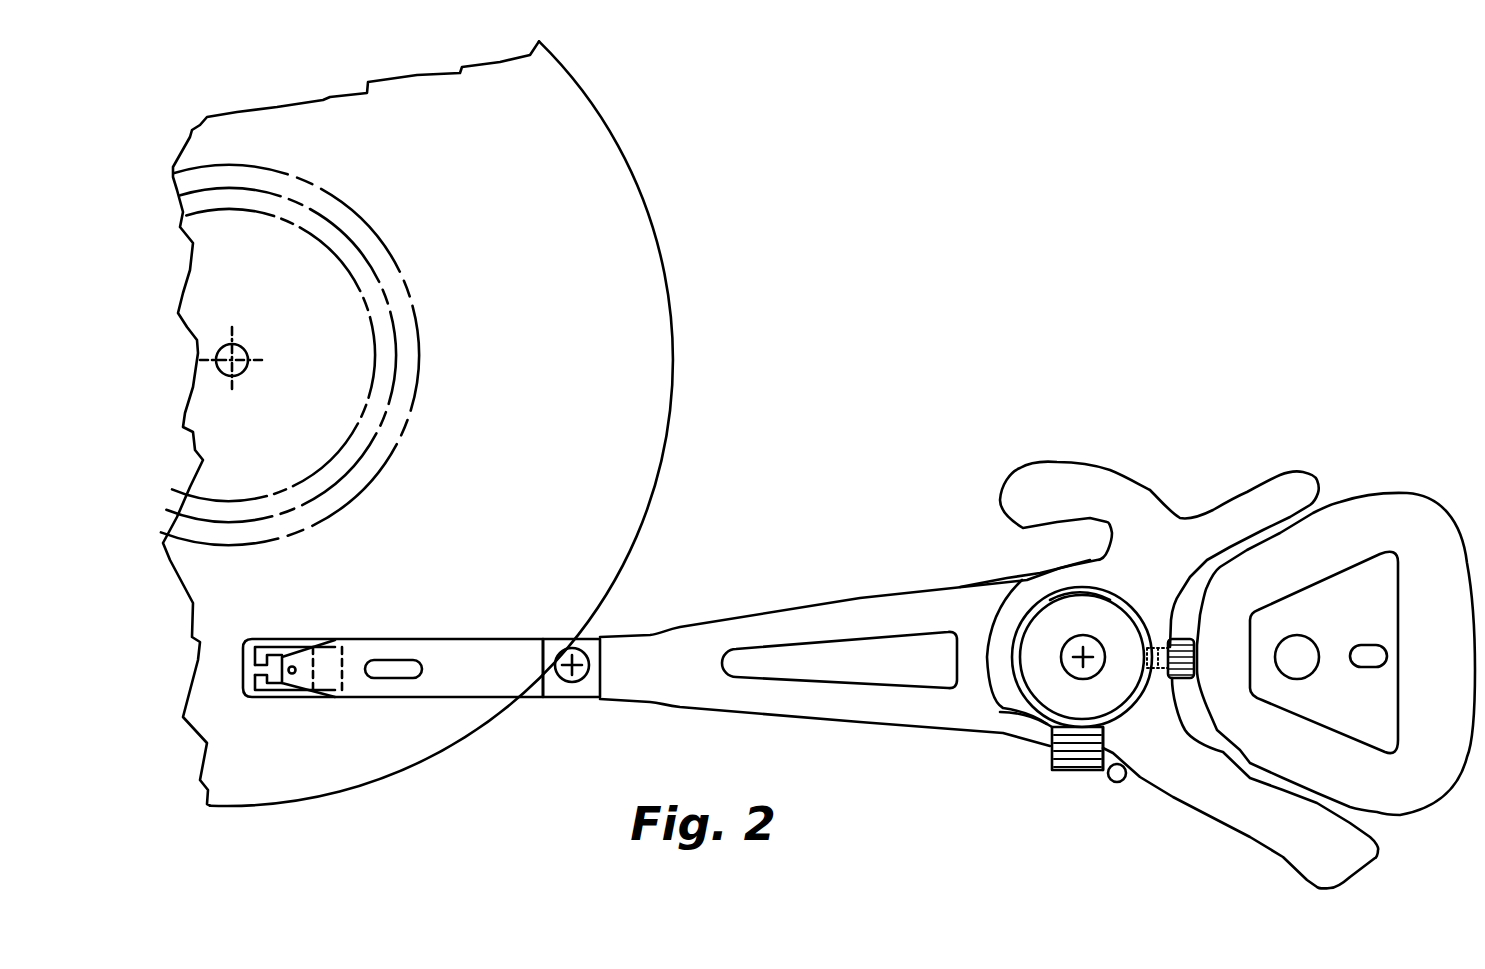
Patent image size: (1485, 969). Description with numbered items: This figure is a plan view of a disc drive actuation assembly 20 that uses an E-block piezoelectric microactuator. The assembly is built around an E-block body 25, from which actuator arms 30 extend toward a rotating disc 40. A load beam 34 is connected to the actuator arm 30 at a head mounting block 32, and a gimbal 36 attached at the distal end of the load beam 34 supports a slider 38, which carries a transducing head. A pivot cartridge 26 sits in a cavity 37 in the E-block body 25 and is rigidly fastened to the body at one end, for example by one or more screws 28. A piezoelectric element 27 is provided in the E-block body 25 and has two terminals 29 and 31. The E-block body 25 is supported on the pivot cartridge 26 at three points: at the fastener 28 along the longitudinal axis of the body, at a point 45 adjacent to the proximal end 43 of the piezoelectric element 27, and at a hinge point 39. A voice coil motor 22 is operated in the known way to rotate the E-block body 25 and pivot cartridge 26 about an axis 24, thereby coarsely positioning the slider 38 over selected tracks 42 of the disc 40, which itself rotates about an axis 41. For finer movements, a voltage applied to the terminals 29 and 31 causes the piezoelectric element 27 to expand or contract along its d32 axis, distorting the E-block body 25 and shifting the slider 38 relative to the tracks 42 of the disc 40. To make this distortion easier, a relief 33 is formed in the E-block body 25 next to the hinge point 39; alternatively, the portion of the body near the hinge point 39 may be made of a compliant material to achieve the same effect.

The disc drive actuation assembly 20 is at (853, 448).
The voice coil motor 22 is at (1410, 492).
The axis 24 is at (1089, 650).
The E-block body 25 is at (987, 625).
The pivot cartridge 26 is at (1141, 627).
The piezoelectric element 27 is at (1060, 776).
The screw 28 is at (1199, 674).
The terminal 29 is at (1121, 783).
The actuator arm 30 is at (953, 731).
The terminal 31 is at (1105, 728).
The head mounting block 32 is at (583, 700).
The relief 33 is at (1100, 558).
The load beam 34 is at (485, 618).
The gimbal 36 is at (328, 640).
The cavity 37 is at (1003, 717).
The slider 38 is at (268, 690).
The hinge point 39 is at (1100, 593).
The disc 40 is at (668, 285).
The axis 41 is at (242, 350).
The tracks 42 is at (419, 384).
The proximal end 43 is at (1143, 780).
The point 45 is at (1120, 703).